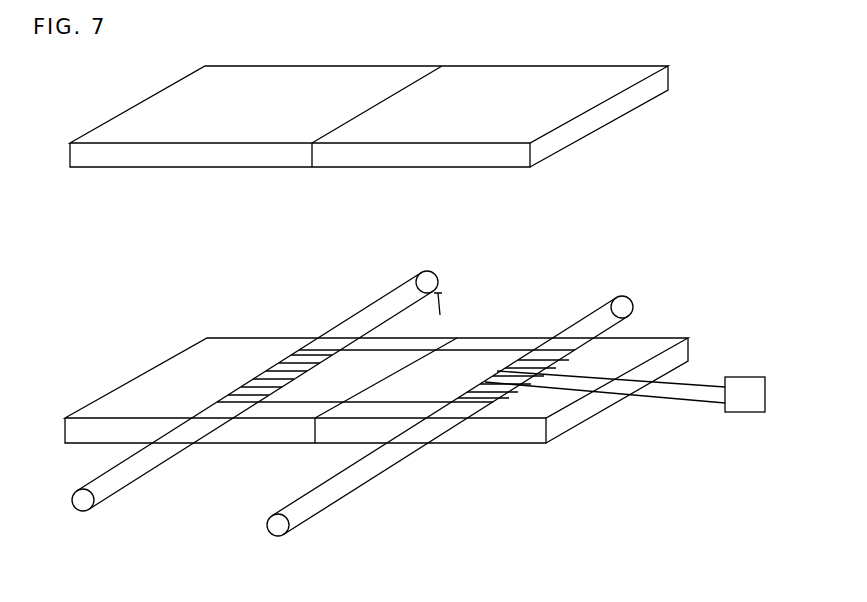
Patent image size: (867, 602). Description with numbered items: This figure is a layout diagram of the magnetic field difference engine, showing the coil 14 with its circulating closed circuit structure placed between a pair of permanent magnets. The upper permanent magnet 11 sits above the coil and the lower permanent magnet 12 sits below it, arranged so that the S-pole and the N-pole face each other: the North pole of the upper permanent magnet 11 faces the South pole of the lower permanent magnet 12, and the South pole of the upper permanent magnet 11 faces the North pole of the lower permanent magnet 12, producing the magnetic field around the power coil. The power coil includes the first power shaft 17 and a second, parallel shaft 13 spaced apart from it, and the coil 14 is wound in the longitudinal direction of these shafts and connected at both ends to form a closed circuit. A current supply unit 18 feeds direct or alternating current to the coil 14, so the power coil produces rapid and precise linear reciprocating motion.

The upper permanent magnet 11 is at (602, 128).
The lower permanent magnet 12 is at (502, 443).
The first rod 13 is at (435, 270).
The coil 14 is at (280, 357).
The first power shaft 17 is at (630, 294).
The current supply unit 18 is at (745, 412).